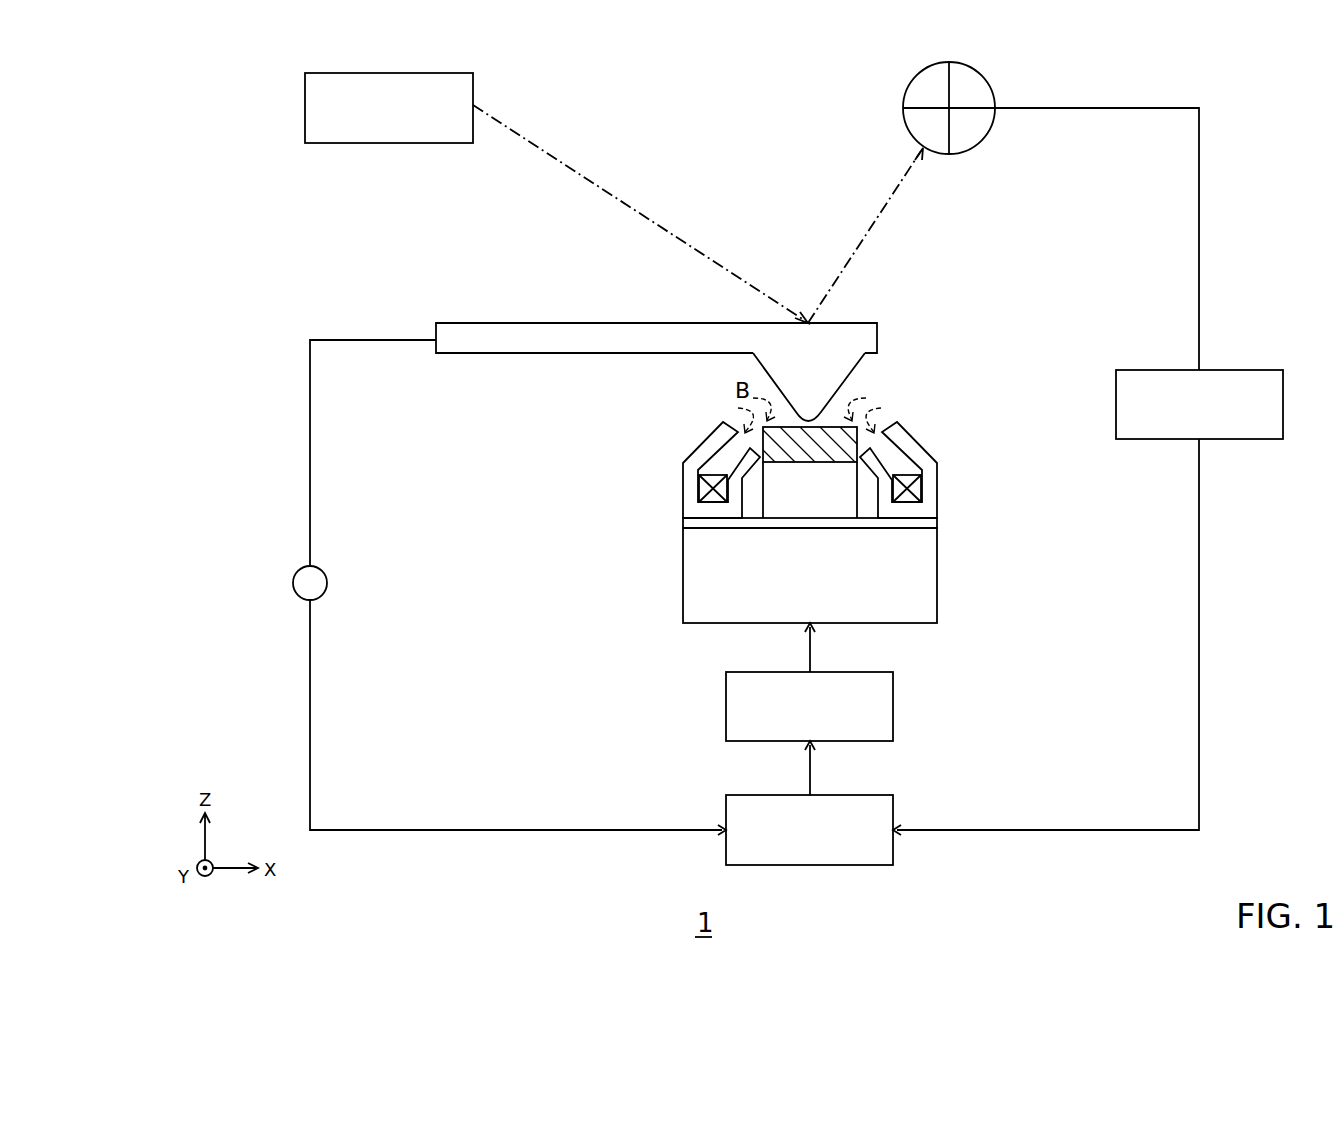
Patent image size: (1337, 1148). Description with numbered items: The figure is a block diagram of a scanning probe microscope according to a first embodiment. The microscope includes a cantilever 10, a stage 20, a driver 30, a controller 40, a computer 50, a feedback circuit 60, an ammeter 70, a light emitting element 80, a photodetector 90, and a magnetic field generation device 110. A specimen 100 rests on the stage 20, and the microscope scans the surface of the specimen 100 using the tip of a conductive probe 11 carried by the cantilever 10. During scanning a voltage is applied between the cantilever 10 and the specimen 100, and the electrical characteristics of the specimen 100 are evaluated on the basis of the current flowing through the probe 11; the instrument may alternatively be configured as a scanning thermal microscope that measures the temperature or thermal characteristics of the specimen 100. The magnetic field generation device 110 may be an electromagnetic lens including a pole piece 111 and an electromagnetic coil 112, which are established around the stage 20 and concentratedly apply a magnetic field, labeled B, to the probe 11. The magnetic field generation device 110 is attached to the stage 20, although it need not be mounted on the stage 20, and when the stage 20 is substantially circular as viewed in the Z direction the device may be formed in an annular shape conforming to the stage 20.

The cantilever 10 is at (521, 322).
The conductive probe 11 is at (810, 413).
The stage 20 is at (938, 520).
The driver 30 is at (938, 603).
The controller 40 is at (893, 707).
The computer 50 is at (893, 812).
The feedback circuit 60 is at (1243, 370).
The ammeter 70 is at (327, 581).
The light emitting element 80 is at (473, 98).
The photodetector 90 is at (988, 78).
The specimen 100 is at (848, 445).
The magnetic field generation device 110 is at (743, 470).
The pole piece 111 is at (699, 452).
The electromagnetic coil 112 is at (703, 490).